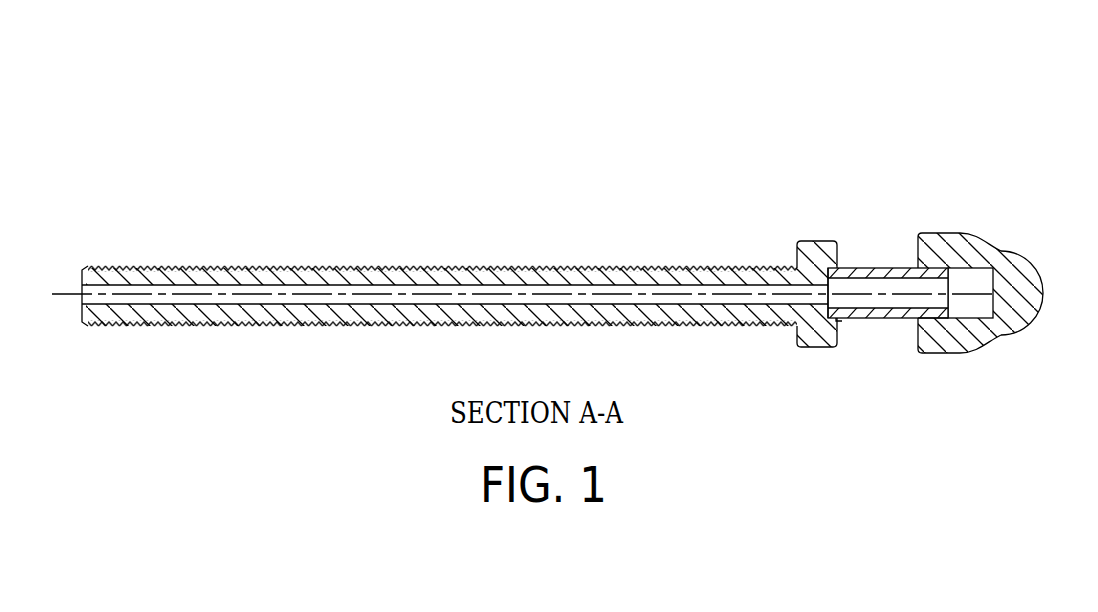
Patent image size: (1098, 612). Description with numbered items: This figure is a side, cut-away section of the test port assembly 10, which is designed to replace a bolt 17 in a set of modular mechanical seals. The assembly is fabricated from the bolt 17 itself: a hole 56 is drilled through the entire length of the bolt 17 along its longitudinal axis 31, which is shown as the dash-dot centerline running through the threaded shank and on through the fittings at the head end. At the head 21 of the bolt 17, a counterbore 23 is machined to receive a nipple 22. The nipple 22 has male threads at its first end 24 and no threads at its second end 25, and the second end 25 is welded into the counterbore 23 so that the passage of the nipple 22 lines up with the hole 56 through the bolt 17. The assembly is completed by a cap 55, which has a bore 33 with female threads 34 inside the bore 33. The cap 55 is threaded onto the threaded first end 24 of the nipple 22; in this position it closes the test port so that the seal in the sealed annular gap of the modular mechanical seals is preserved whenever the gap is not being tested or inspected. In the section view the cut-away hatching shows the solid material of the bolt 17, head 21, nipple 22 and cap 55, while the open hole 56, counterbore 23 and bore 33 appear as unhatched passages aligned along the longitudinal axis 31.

The test port assembly 10 is at (658, 155).
The bolt 17 is at (350, 265).
The head 21 is at (812, 242).
The nipple 22 is at (877, 320).
The counterbore 23 is at (832, 288).
The first end 24 is at (838, 320).
The second end 25 is at (971, 245).
The longitudinal axis 31 is at (65, 297).
The bore 33 is at (978, 308).
The female threads 34 is at (937, 318).
The cap 55 is at (1037, 318).
The hole 56 is at (332, 300).